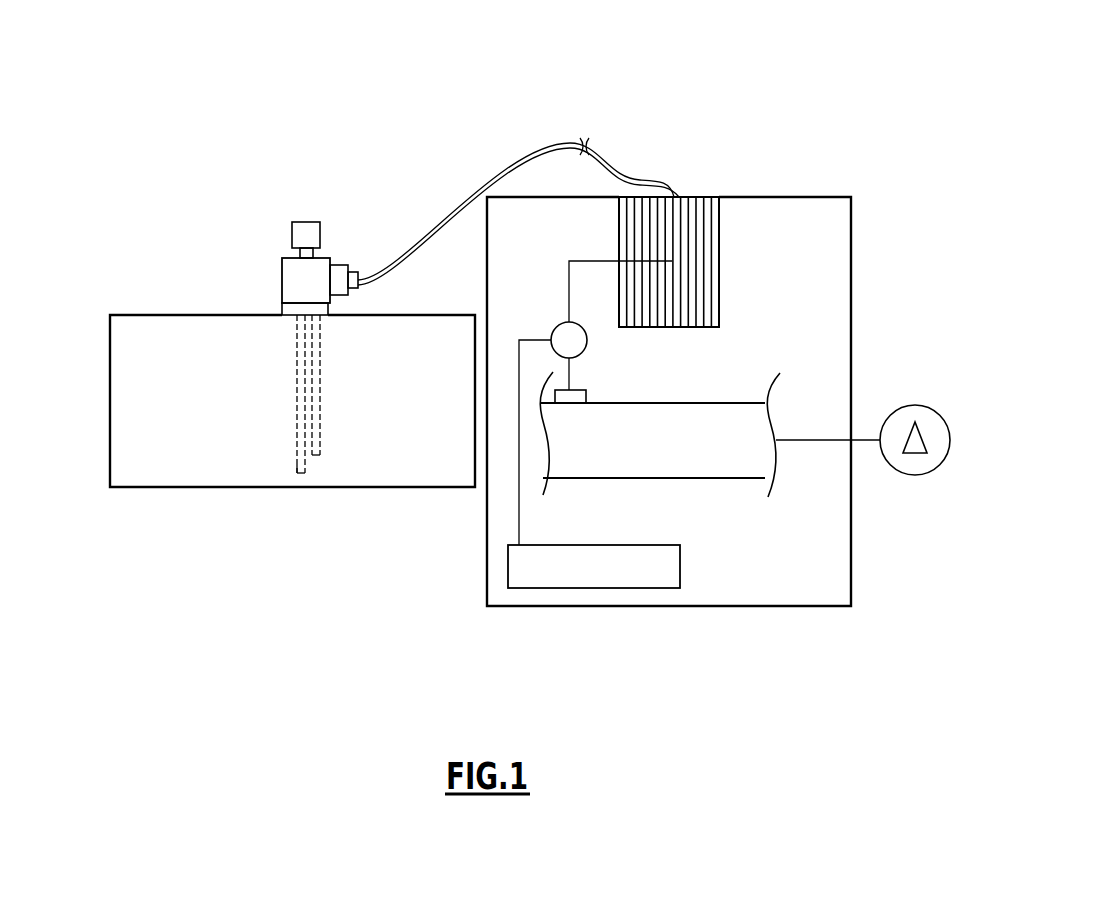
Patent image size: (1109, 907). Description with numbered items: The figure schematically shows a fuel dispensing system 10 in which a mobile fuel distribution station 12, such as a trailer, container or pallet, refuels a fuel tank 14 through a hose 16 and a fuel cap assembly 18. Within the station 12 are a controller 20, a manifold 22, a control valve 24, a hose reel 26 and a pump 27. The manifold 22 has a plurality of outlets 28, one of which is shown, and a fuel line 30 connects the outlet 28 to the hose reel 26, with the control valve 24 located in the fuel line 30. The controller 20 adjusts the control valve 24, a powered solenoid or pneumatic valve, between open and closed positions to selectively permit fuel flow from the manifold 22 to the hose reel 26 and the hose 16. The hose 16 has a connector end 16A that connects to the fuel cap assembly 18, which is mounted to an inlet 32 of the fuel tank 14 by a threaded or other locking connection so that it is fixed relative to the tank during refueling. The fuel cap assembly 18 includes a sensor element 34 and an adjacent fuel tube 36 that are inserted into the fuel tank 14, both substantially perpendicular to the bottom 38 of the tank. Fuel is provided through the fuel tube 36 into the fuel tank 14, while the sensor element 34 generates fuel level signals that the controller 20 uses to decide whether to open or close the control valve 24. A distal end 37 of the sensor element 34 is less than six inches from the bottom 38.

The fuel dispensing system 10 is at (817, 40).
The mobile fuel distribution station 12 is at (852, 338).
The fuel tank 14 is at (110, 375).
The hose 16 is at (618, 160).
The connector end 16A is at (357, 272).
The fuel cap assembly 18 is at (257, 271).
The controller 20 is at (681, 568).
The manifold 22 is at (620, 478).
The control valve 24 is at (555, 328).
The hose reel 26 is at (719, 290).
The pump 27 is at (915, 475).
The outlet 28 is at (574, 403).
The fuel line 30 is at (570, 380).
The inlet 32 is at (282, 310).
The sensor element 34 is at (298, 370).
The fuel tube 36 is at (318, 395).
The distal end 37 is at (297, 477).
The bottom 38 is at (165, 470).